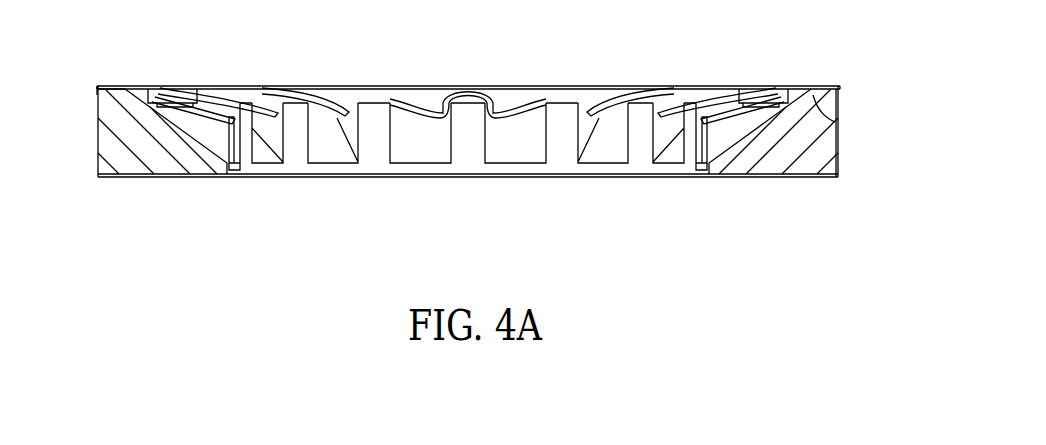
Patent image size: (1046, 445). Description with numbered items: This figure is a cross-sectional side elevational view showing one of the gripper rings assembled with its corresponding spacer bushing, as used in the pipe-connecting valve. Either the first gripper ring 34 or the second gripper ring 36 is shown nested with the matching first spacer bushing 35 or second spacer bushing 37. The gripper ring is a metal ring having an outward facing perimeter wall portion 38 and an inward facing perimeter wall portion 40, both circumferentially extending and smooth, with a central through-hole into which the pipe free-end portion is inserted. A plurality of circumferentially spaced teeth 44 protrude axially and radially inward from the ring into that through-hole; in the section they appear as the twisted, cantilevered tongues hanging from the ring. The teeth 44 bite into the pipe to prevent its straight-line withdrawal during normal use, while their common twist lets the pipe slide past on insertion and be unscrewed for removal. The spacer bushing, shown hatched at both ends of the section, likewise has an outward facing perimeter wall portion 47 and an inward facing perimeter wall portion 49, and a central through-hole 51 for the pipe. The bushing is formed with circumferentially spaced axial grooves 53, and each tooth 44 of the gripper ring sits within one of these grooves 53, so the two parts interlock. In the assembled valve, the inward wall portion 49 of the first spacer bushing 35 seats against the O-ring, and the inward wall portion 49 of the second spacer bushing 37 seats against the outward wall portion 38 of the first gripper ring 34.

The first gripper ring 34 is at (464, 52).
The second gripper ring 36 is at (165, 86).
The first spacer bushing 35 is at (818, 139).
The second spacer bushing 37 is at (842, 146).
The outward facing perimeter wall portion 38 is at (782, 85).
The inward facing perimeter wall portion 40 is at (842, 122).
The teeth 44 is at (518, 87).
The outward facing perimeter wall portion 47 is at (168, 178).
The inward facing perimeter wall portion 49 is at (118, 86).
The central through-hole 51 is at (598, 176).
The axial grooves 53 is at (421, 140).